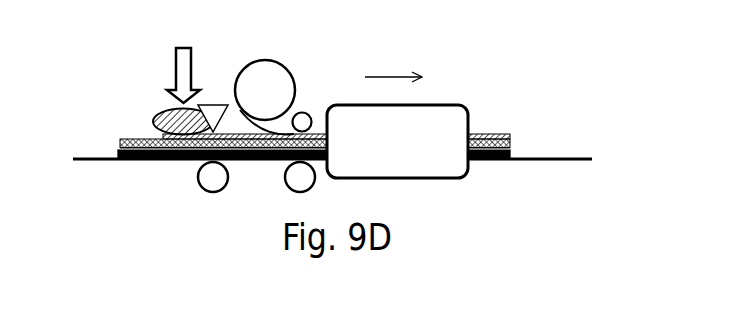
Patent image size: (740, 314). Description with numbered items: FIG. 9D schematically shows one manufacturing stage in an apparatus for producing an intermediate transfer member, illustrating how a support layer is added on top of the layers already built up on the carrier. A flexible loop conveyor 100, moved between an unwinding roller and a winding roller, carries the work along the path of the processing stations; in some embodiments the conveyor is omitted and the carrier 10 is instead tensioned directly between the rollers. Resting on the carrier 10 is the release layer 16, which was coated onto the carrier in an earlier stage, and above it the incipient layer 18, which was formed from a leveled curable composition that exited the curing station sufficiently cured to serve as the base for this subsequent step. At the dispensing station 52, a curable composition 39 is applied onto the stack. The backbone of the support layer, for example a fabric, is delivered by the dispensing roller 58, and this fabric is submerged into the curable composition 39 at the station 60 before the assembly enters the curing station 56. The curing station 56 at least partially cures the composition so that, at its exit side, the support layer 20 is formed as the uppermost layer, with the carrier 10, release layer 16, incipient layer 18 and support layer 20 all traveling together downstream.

The flexible loop conveyor 100 is at (93, 155).
The carrier 10 is at (510, 155).
The release layer 16 is at (513, 150).
The incipient layer 18 is at (510, 147).
The support layer 20 is at (477, 128).
The curable composition 39 is at (163, 110).
The dispensing station 52 is at (182, 71).
The dispensing roller 58 is at (240, 70).
The station 60 is at (310, 97).
The curing station 56 is at (382, 158).